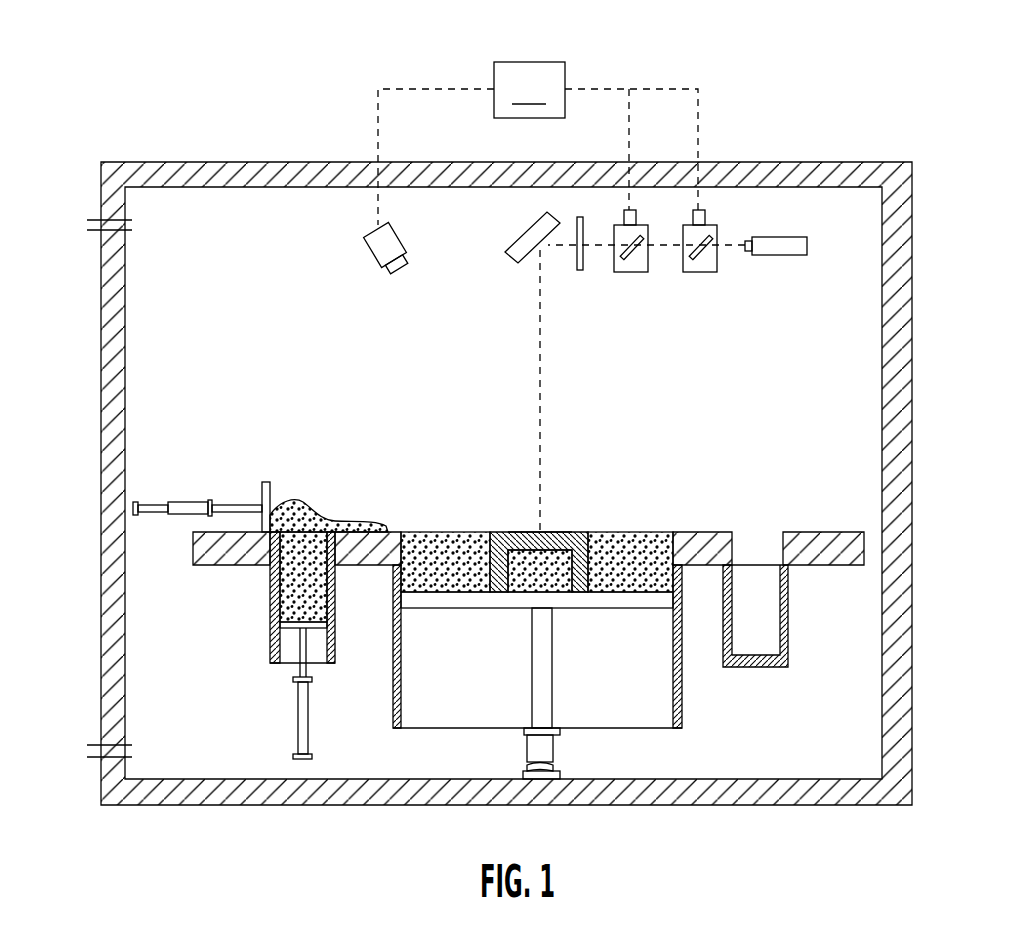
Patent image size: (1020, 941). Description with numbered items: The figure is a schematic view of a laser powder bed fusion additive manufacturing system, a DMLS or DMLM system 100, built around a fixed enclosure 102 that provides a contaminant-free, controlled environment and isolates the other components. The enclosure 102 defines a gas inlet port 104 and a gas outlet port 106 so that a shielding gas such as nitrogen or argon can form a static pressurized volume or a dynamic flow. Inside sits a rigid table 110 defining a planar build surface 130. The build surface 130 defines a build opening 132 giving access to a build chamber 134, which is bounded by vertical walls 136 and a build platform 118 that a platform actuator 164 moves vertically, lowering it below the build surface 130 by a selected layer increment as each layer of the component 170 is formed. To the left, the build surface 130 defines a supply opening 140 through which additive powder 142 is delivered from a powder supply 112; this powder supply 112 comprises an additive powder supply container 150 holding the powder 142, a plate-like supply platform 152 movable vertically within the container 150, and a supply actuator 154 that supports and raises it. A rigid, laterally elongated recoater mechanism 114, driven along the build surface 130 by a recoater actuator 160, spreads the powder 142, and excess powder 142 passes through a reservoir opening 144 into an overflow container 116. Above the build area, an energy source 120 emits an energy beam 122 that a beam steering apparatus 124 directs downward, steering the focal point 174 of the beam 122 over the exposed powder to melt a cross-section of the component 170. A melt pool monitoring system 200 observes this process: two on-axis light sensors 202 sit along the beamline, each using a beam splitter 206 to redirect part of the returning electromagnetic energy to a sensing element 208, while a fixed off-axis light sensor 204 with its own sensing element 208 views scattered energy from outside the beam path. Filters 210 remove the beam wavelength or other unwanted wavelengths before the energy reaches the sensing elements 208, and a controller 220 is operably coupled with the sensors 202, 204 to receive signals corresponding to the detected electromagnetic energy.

The DMLM system 100 is at (473, 483).
The fixed enclosure 102 is at (315, 183).
The gas inlet port 104 is at (135, 228).
The gas outlet port 106 is at (133, 749).
The table 110 is at (806, 560).
The powder supply 112 is at (284, 645).
The recoater mechanism 114 is at (265, 482).
The overflow container 116 is at (728, 641).
The build platform 118 is at (430, 600).
The energy source 120 is at (790, 237).
The energy beam 122 is at (540, 382).
The beam steering apparatus 124 is at (520, 235).
The planar build surface 130 is at (532, 576).
The build opening 132 is at (640, 545).
The build chamber 134 is at (543, 625).
The vertical walls 136 is at (393, 702).
The supply opening 140 is at (433, 517).
The additive powder 142 is at (308, 505).
The reservoir opening 144 is at (781, 548).
The additive powder supply container 150 is at (336, 594).
The supply platform 152 is at (312, 628).
The supply actuator 154 is at (299, 718).
The recoater actuator 160 is at (190, 502).
The platform actuator 164 is at (550, 745).
The component 170 is at (500, 592).
The focal point 174 is at (538, 531).
The melt pool monitoring system 200 is at (544, 167).
The on-axis light sensor 202 is at (625, 207).
The off-axis light sensor 204 is at (368, 238).
The beam splitter 206 is at (634, 261).
The sensing element 208 is at (405, 260).
The filter 210 is at (399, 273).
The controller 220 is at (529, 90).